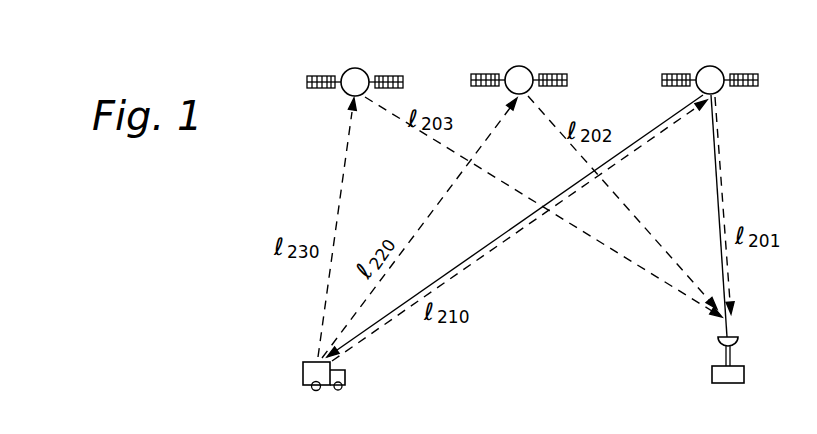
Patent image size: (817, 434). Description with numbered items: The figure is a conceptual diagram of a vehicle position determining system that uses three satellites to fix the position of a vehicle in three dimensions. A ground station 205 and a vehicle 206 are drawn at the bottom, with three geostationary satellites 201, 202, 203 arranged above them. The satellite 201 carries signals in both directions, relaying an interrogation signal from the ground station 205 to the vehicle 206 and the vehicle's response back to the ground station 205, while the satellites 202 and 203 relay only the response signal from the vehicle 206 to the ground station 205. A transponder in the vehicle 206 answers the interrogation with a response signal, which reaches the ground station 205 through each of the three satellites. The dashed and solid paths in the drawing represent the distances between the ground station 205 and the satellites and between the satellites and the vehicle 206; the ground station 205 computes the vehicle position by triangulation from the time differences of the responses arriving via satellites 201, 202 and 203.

The satellite 201 is at (724, 95).
The satellite 202 is at (521, 96).
The satellite 203 is at (345, 97).
The ground station 205 is at (744, 375).
The vehicle 206 is at (345, 378).